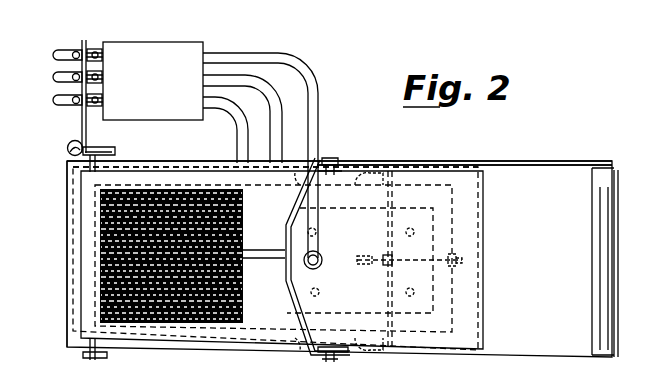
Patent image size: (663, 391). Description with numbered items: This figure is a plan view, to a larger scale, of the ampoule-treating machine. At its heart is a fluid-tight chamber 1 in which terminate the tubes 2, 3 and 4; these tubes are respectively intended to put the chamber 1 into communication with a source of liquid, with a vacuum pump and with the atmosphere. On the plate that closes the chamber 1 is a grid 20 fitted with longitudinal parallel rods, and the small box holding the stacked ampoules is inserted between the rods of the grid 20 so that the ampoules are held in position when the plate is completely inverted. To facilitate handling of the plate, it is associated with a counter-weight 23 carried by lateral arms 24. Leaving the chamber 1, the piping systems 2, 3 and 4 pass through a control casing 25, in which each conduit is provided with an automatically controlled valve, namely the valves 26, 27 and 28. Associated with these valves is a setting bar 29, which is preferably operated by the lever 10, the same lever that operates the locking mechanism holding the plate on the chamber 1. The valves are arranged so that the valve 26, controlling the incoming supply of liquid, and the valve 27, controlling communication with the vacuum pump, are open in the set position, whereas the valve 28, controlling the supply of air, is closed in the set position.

The fluid-tight chamber 1 is at (470, 288).
The tube 2 is at (318, 135).
The tube 3 is at (275, 140).
The tube 4 is at (240, 135).
The lever 10 is at (67, 151).
The grid 20 is at (245, 228).
The counter-weight 23 is at (602, 238).
The lateral arms 24 is at (541, 146).
The control casing 25 is at (144, 52).
The valve 26 is at (82, 50).
The valve 27 is at (75, 78).
The valve 28 is at (73, 100).
The setting bar 29 is at (83, 124).